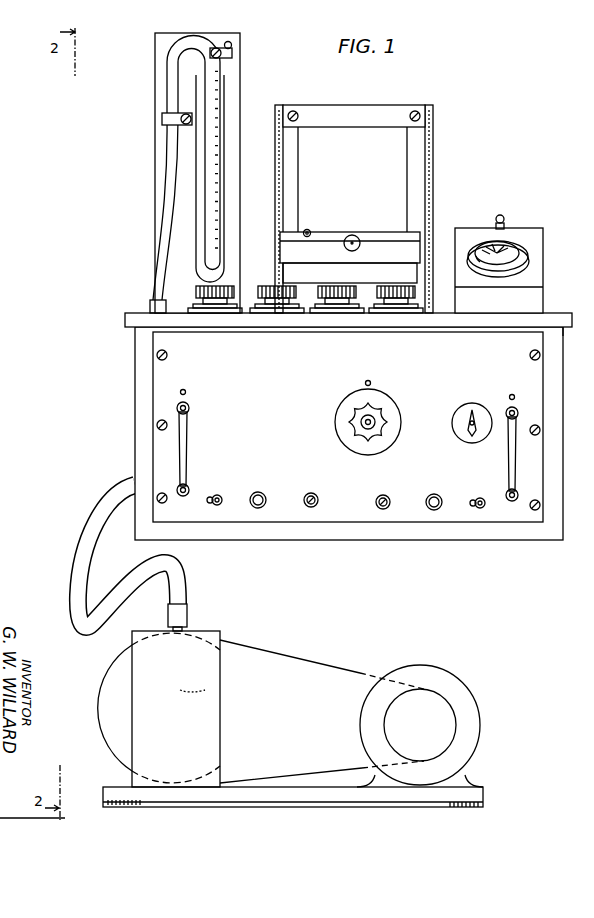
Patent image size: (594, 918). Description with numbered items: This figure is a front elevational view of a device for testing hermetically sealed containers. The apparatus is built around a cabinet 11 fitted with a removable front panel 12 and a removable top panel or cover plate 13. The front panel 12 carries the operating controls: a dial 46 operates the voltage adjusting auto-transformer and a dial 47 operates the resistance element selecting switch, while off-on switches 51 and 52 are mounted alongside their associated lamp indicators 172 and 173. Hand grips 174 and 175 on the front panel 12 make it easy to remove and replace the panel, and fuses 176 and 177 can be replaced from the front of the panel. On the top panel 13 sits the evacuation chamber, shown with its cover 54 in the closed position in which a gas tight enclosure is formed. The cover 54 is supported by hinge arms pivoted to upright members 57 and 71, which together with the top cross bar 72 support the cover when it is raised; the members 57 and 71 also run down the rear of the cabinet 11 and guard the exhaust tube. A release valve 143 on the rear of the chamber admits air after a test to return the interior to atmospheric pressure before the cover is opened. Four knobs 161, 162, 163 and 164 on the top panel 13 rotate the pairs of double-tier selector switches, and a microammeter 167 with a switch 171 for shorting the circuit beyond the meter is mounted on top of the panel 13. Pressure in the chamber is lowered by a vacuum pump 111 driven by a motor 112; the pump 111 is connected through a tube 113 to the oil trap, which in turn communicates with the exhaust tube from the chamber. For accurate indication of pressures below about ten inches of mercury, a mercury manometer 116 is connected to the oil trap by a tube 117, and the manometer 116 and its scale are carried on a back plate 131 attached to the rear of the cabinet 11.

The cabinet 11 is at (366, 535).
The front panel 12 is at (532, 520).
The top panel 13 is at (552, 318).
The dial 46 is at (378, 440).
The dial 47 is at (464, 436).
The off-on switch 51 is at (222, 495).
The off-on switch 52 is at (480, 497).
The cover 54 is at (364, 234).
The upright member 57 is at (290, 168).
The upright member 71 is at (418, 165).
The top cross bar 72 is at (346, 113).
The vacuum pump 111 is at (212, 686).
The motor 112 is at (430, 673).
The tube 113 is at (96, 547).
The mercury manometer 116 is at (225, 90).
The tube 117 is at (158, 272).
The back plate 131 is at (155, 52).
The release valve 143 is at (309, 230).
The knob 161 is at (202, 291).
The knob 162 is at (268, 289).
The knob 163 is at (350, 290).
The knob 164 is at (406, 290).
The microammeter 167 is at (530, 265).
The switch 171 is at (502, 224).
The lamp indicator 172 is at (263, 493).
The lamp indicator 173 is at (434, 494).
The hand grip 174 is at (186, 445).
The hand grip 175 is at (506, 458).
The fuse 176 is at (312, 493).
The fuse 177 is at (390, 487).